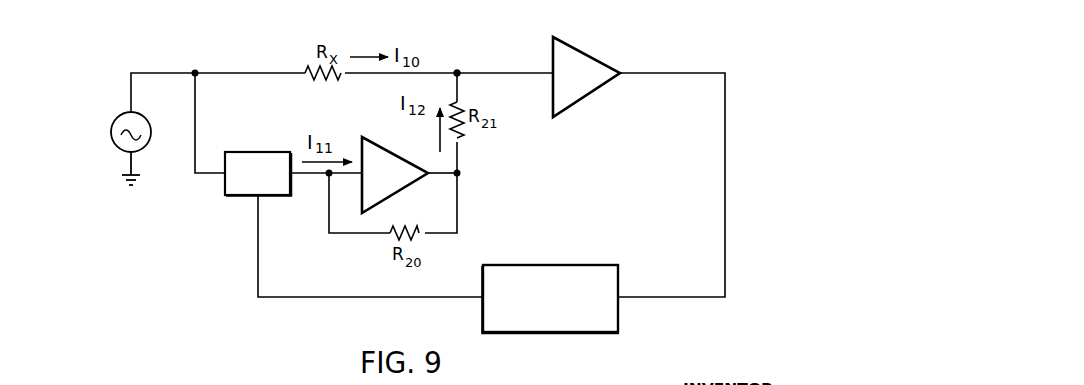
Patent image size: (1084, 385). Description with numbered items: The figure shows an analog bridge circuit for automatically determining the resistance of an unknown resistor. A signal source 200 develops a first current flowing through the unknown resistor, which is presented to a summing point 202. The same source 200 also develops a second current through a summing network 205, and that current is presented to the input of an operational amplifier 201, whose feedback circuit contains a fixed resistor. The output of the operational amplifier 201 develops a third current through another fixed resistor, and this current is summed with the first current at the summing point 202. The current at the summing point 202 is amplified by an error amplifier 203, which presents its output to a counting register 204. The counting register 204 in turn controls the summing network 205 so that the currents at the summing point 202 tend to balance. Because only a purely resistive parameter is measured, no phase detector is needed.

The signal source 200 is at (113, 123).
The operational amplifier 201 is at (397, 175).
The summing point 202 is at (462, 60).
The error amplifier 203 is at (600, 77).
The counting register 204 is at (551, 287).
The summing network 205 is at (208, 213).